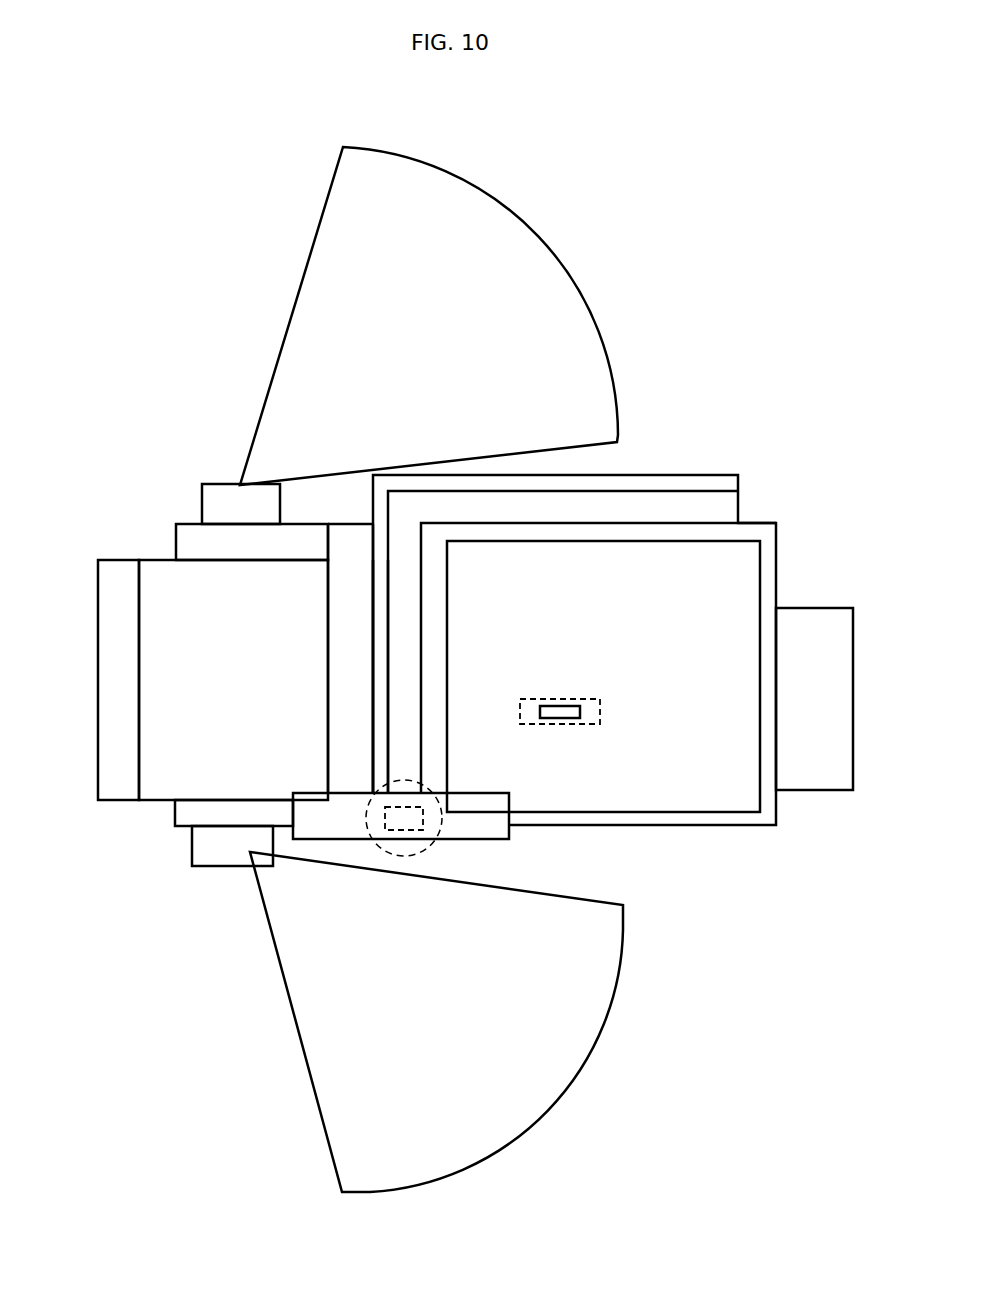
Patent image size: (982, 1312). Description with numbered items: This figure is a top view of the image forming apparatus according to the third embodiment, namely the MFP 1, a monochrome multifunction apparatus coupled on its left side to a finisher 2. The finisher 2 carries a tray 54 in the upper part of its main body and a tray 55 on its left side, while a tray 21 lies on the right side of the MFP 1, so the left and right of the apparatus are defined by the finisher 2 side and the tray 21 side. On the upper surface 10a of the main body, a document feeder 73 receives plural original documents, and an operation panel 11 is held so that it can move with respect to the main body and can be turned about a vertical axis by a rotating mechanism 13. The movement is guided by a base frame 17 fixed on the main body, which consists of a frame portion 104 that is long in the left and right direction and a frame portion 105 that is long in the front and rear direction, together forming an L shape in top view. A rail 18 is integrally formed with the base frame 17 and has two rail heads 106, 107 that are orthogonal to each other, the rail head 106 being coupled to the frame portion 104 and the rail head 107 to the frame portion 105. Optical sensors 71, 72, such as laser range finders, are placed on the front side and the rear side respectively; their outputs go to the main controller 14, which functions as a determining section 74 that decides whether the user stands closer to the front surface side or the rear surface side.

The MFP 1 is at (778, 500).
The finisher 2 is at (188, 540).
The upper surface 10a is at (352, 565).
The operation panel 11 is at (500, 840).
The rotating mechanism 13 is at (425, 850).
The main controller 14 is at (560, 700).
The base frame 17 is at (494, 594).
The rail 18 is at (468, 587).
The tray 21 is at (820, 632).
The tray (second tray) 54 is at (162, 585).
The tray (third tray) 55 is at (118, 575).
The optical sensor 71 is at (226, 500).
The optical sensor 72 is at (223, 852).
The document feeder 73 is at (667, 795).
The determining section 74 is at (581, 712).
The frame portion 104 is at (716, 508).
The frame portion 105 is at (400, 722).
The rail head 106 is at (642, 485).
The rail head 107 is at (380, 655).